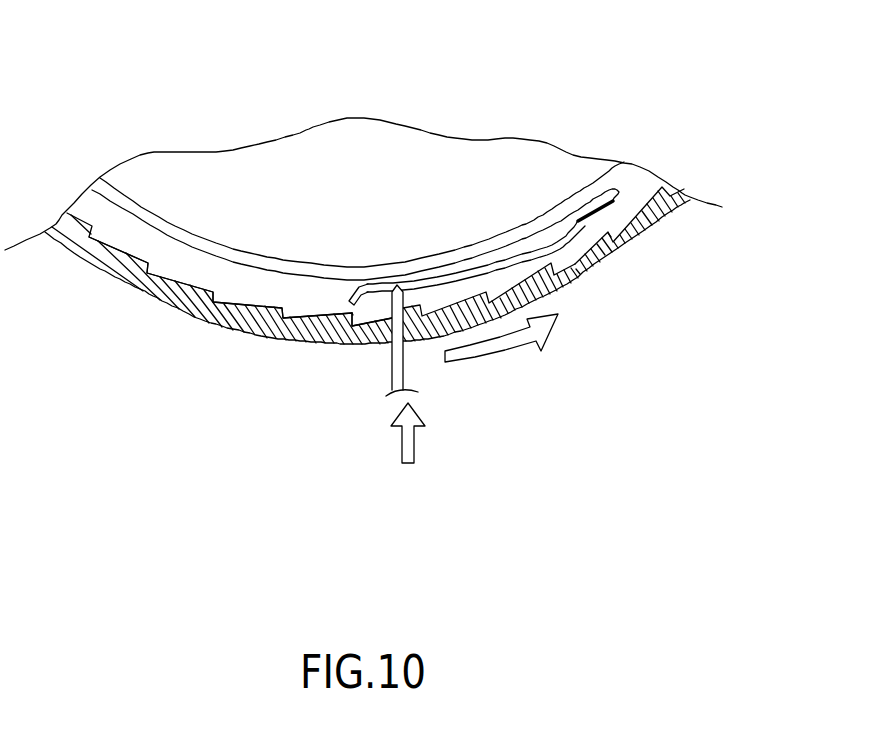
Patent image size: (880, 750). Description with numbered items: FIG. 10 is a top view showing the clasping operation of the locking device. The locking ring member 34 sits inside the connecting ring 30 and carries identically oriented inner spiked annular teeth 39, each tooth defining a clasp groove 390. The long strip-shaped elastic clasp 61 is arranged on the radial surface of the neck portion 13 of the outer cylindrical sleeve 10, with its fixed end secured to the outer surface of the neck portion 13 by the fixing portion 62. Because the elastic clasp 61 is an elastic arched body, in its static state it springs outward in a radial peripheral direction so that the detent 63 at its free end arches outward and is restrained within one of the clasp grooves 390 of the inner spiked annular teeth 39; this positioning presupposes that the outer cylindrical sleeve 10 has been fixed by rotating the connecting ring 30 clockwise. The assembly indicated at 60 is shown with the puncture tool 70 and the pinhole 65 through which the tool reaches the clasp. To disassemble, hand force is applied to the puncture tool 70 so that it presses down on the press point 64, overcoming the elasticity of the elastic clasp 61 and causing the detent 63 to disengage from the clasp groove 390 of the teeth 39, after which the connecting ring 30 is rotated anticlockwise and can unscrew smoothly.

The outer cylindrical sleeve 10 is at (358, 257).
The neck portion 13 is at (510, 248).
The connecting ring 30 is at (233, 327).
The locking ring member 34 is at (197, 273).
The inner spiked annular teeth 39 is at (330, 315).
The clasp groove 390 is at (337, 314).
The carrier assembly 60 is at (548, 126).
The elastic clasp 61 is at (572, 259).
The fixing portion 62 is at (618, 209).
The detent 63 is at (353, 288).
The press point 64 is at (399, 296).
The pinhole 65 is at (390, 314).
The puncture tool 70 is at (405, 362).